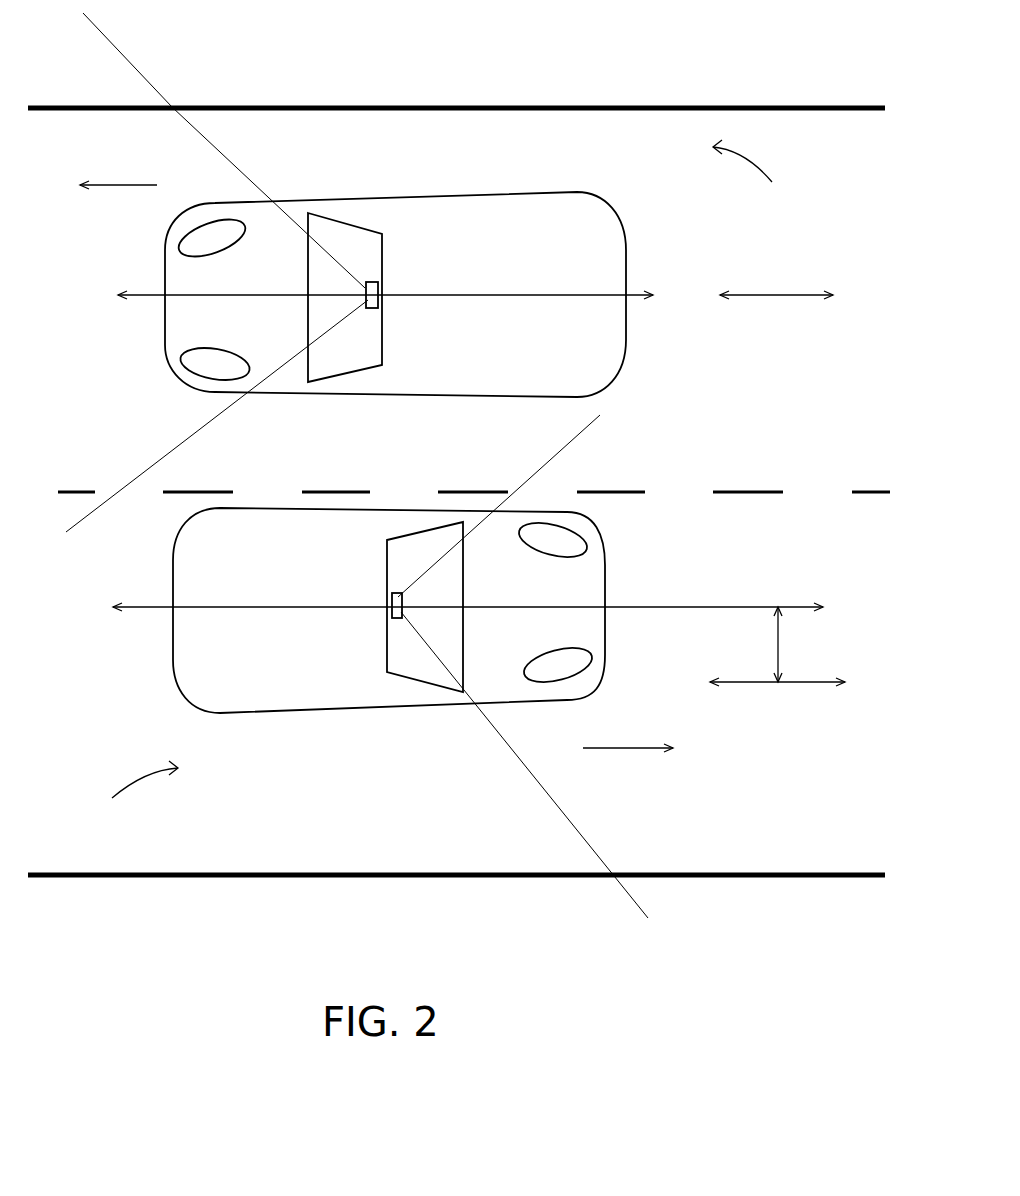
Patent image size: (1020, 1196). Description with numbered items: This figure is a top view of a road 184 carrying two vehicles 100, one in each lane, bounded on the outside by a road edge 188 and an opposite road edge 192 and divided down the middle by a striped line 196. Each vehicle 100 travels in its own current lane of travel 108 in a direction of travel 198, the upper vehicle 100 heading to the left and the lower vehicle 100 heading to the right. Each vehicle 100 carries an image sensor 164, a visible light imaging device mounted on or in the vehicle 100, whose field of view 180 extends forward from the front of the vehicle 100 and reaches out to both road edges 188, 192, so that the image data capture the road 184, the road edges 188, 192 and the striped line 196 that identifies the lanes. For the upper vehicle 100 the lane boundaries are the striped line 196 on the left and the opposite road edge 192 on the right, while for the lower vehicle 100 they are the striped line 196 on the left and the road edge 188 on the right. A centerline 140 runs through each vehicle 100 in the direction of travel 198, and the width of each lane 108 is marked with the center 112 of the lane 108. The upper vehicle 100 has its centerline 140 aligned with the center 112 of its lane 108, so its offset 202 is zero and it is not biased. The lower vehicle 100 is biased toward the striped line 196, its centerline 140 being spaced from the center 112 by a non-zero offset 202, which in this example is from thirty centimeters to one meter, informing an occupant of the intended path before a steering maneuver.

The vehicle 100 is at (417, 195).
The current lane of travel 108 is at (458, 492).
The center of the lane 112 is at (763, 297).
The centerline of the vehicle 140 is at (463, 295).
The image sensor 164 is at (378, 283).
The field of view 180 is at (233, 163).
The road 184 is at (75, 432).
The road edge 188 is at (273, 880).
The opposite road edge 192 is at (572, 107).
The striped line 196 is at (737, 490).
The direction of travel 198 is at (105, 190).
The offset 202 is at (777, 645).